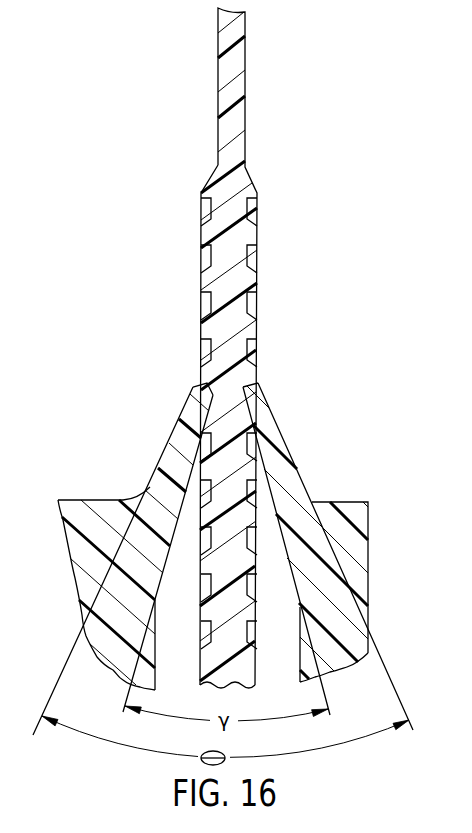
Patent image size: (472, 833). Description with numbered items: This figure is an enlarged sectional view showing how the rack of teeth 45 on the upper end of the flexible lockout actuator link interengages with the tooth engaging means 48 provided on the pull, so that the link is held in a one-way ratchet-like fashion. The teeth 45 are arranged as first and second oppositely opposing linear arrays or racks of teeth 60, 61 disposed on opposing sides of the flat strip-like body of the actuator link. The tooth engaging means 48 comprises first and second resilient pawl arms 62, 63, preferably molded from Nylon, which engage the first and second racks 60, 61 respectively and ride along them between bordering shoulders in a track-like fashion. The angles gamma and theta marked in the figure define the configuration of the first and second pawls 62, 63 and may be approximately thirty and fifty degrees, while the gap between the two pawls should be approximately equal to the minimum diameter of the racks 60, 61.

The rack of teeth 45 is at (247, 329).
The tooth engaging means 48 is at (305, 504).
The first rack of teeth 60 is at (206, 210).
The second rack of teeth 61 is at (253, 209).
The first resilient pawl arm 62 is at (183, 435).
The second resilient pawl arm 63 is at (274, 433).